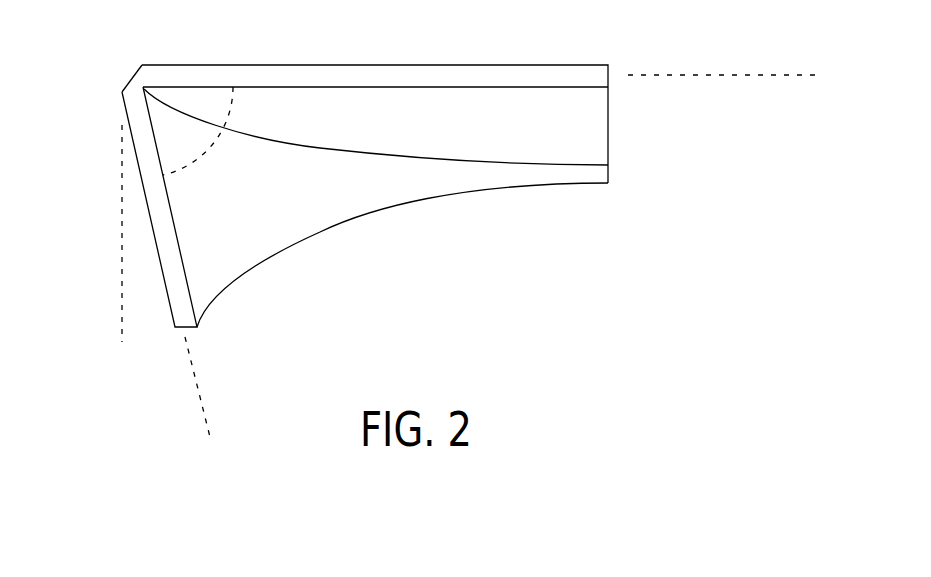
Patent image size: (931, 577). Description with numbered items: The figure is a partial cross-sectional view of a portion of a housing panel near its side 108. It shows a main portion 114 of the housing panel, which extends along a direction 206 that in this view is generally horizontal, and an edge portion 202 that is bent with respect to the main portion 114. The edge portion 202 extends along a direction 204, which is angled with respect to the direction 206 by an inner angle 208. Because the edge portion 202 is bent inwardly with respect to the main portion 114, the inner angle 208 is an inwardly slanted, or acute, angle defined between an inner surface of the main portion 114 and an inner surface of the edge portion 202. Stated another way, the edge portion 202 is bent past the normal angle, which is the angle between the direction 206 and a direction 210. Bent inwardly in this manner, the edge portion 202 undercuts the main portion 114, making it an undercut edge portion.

The side 108 is at (121, 91).
The main portion 114 is at (389, 78).
The edge portion 202 is at (174, 252).
The direction 204 is at (197, 384).
The direction 206 is at (723, 75).
The inner angle 208 is at (215, 140).
The direction 210 is at (122, 222).